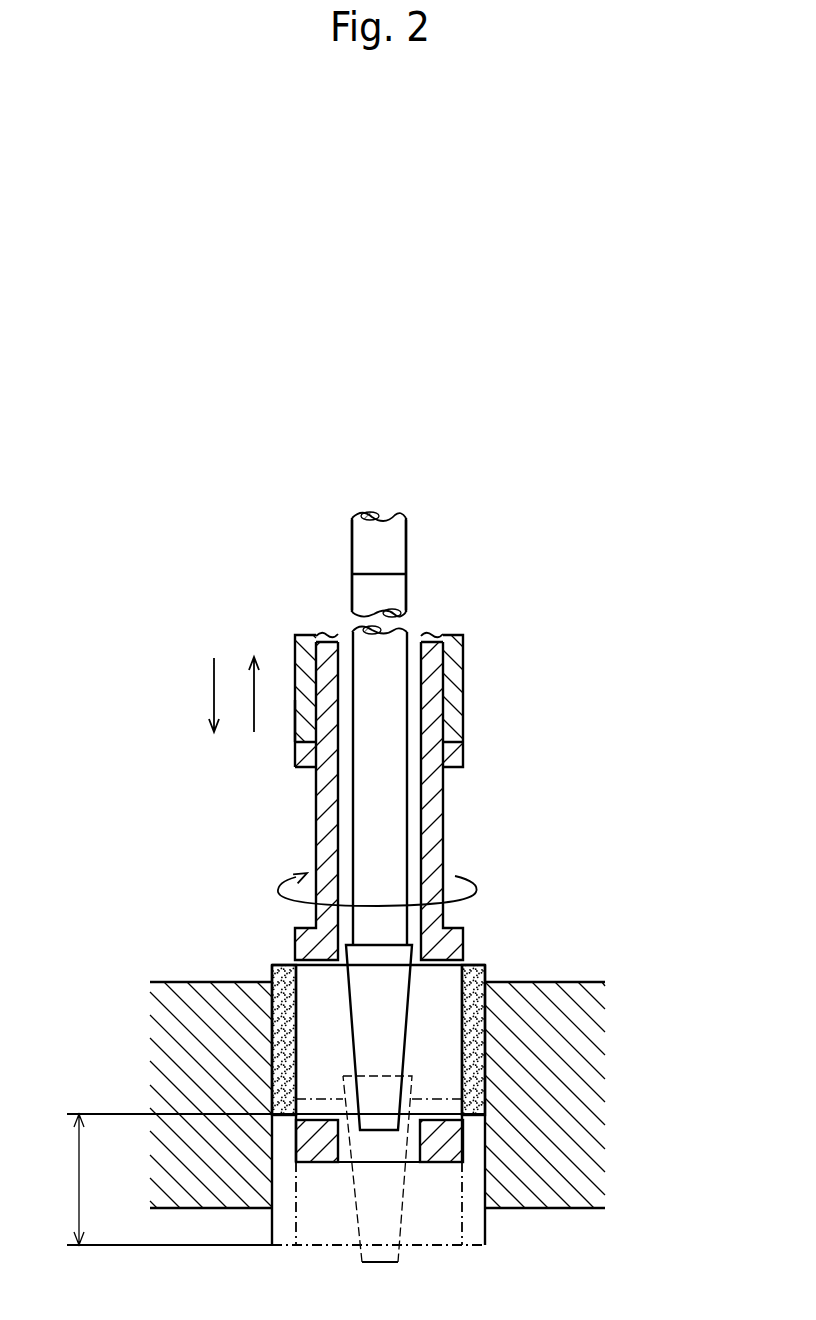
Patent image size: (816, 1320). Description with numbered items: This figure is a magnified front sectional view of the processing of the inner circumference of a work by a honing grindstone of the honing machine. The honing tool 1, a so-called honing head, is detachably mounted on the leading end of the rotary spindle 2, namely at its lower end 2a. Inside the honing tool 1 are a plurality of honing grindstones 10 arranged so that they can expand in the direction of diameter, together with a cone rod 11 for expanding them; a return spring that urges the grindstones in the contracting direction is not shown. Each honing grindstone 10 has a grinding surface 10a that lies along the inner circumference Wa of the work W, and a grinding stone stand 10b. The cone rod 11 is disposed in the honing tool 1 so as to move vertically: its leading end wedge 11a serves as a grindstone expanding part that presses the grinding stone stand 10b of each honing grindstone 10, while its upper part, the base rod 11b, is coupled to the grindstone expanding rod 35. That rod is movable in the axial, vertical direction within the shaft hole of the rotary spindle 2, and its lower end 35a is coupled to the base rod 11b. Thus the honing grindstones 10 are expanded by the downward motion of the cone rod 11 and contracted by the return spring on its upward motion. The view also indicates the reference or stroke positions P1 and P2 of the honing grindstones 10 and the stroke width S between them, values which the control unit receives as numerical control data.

The honing tool 1 is at (464, 815).
The rotary spindle 2 is at (477, 665).
The lower end 2a is at (450, 723).
The honing grindstone 10 is at (262, 993).
The grinding surface 10a is at (268, 1057).
The grinding stone stand 10b is at (320, 992).
The cone rod 11 is at (340, 803).
The leading end wedge 11a is at (425, 950).
The base rod 11b is at (372, 592).
The grindstone expanding rod 35 is at (340, 518).
The lower end 35a is at (385, 548).
The work W is at (603, 977).
The inner circumference Wa is at (485, 1167).
The reference position P1 is at (247, 1114).
The reference position P2 is at (141, 1252).
The stroke width S is at (64, 1179).